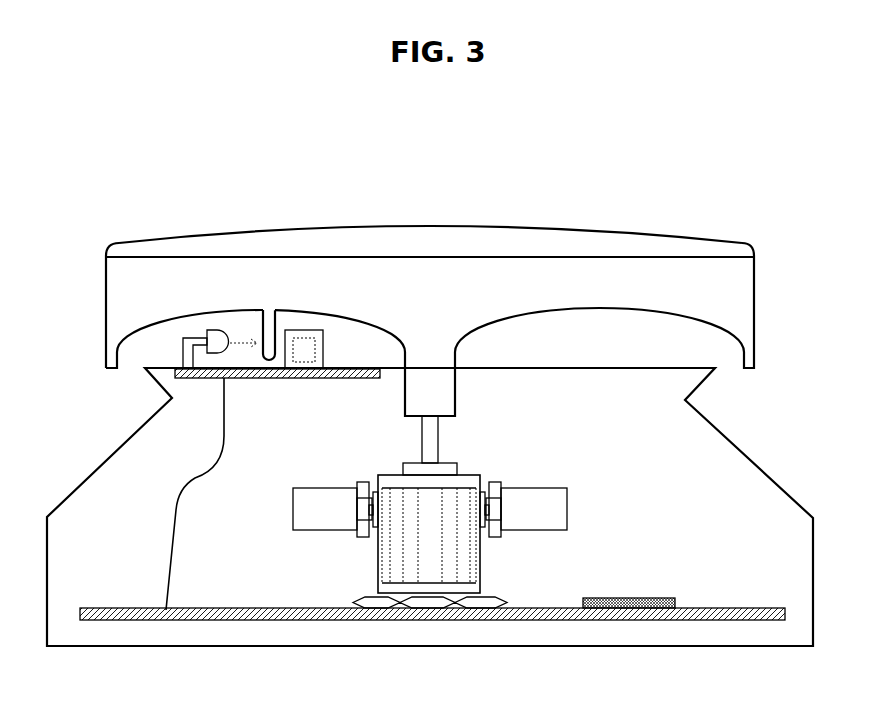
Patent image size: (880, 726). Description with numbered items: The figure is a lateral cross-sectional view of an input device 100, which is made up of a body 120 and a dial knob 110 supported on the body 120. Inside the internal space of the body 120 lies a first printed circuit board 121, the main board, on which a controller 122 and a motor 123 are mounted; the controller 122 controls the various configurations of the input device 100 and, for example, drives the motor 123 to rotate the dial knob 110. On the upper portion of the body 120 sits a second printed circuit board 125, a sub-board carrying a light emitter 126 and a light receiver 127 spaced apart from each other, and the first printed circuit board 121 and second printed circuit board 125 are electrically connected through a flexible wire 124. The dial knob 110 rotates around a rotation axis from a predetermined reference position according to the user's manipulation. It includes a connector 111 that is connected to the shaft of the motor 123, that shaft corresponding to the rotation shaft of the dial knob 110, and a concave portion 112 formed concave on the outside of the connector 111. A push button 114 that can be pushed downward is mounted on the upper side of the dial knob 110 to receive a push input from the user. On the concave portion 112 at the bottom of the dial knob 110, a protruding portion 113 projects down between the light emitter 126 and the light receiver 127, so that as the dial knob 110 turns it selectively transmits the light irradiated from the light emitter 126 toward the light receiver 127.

The input device 100 is at (444, 125).
The dial knob 110 is at (735, 292).
The connector 111 is at (442, 388).
The concave portion 112 is at (190, 313).
The protruding portion 113 is at (272, 326).
The push button 114 is at (500, 238).
The body 120 is at (750, 458).
The first printed circuit board 121 is at (710, 618).
The controller 122 is at (660, 597).
The motor 123 is at (463, 557).
The flexible wire 124 is at (183, 487).
The second printed circuit board 125 is at (196, 376).
The light emitter 126 is at (218, 340).
The light receiver 127 is at (320, 343).